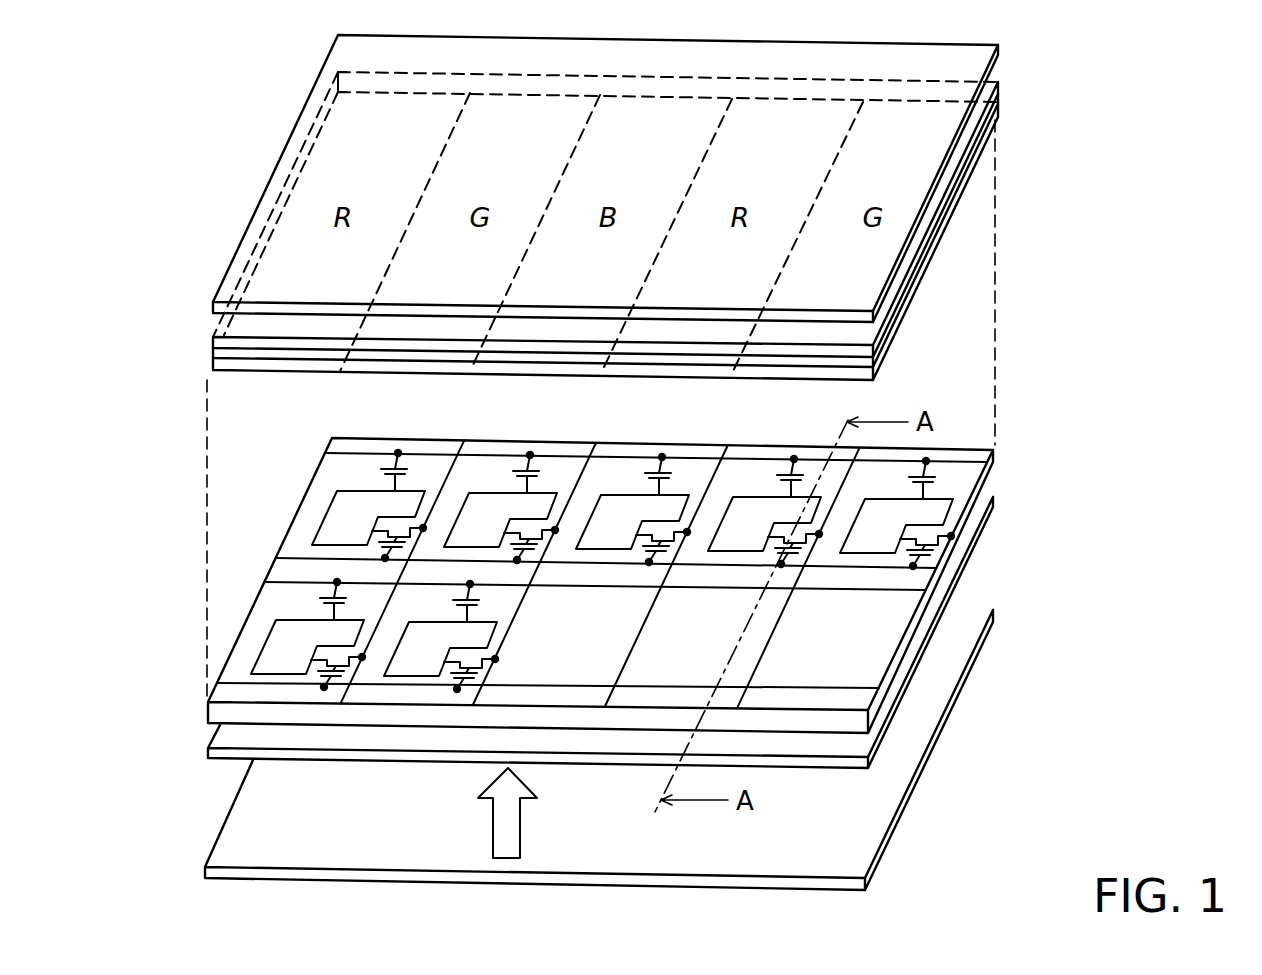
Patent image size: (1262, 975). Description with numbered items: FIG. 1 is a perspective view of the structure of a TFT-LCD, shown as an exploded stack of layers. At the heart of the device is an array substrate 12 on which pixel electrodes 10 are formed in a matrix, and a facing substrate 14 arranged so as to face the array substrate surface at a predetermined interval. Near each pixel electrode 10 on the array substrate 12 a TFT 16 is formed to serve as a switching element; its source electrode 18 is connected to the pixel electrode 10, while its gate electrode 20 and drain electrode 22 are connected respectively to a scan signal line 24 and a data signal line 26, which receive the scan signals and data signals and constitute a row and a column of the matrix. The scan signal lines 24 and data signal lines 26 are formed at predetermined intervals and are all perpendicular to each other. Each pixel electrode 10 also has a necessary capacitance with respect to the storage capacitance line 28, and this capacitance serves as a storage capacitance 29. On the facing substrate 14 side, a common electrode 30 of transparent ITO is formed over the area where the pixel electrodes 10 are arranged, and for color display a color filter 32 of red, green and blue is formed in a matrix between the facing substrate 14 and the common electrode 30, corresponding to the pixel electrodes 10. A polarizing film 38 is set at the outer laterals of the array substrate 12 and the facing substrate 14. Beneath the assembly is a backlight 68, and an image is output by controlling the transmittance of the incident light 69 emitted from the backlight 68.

The pixel electrode 10 is at (340, 515).
The array substrate 12 is at (215, 712).
The facing substrate 14 is at (215, 350).
The TFT 16 is at (397, 537).
The source electrode 18 is at (387, 528).
The gate electrode 20 is at (310, 672).
The drain electrode 22 is at (405, 535).
The scan signal line 24 is at (297, 557).
The data signal line 26 is at (353, 705).
The storage capacitance line 28 is at (287, 580).
The storage capacitance 29 is at (297, 597).
The common electrode 30 is at (232, 372).
The color filter 32 is at (213, 363).
The polarizing film 38 is at (213, 308).
The backlight 68 is at (233, 825).
The incident light 69 is at (500, 826).